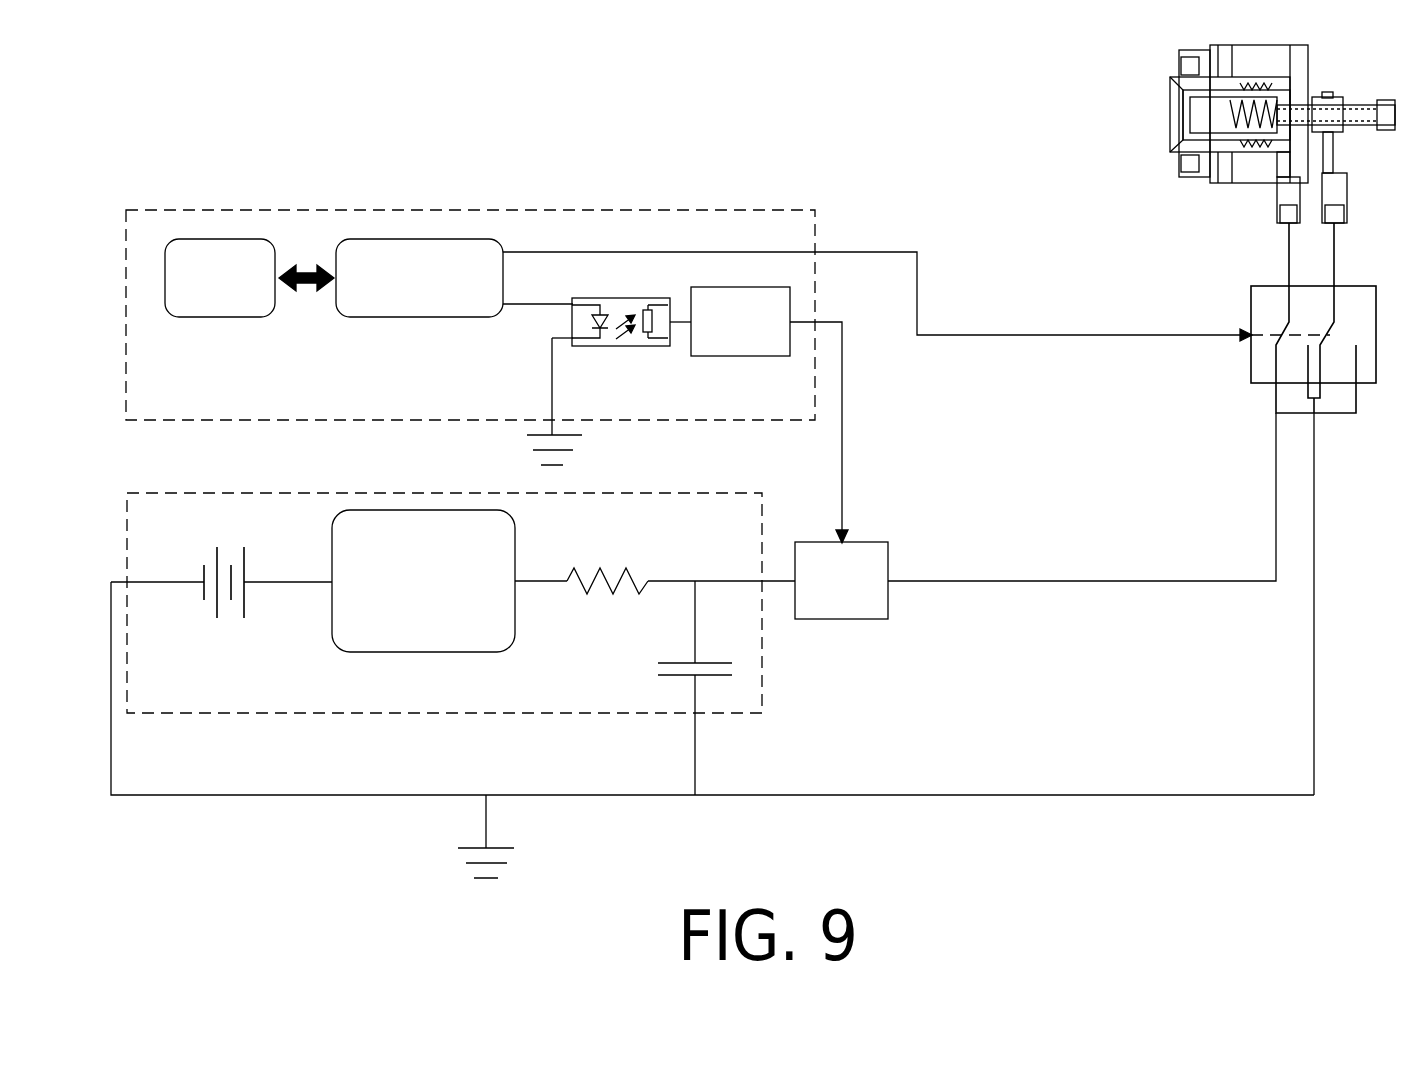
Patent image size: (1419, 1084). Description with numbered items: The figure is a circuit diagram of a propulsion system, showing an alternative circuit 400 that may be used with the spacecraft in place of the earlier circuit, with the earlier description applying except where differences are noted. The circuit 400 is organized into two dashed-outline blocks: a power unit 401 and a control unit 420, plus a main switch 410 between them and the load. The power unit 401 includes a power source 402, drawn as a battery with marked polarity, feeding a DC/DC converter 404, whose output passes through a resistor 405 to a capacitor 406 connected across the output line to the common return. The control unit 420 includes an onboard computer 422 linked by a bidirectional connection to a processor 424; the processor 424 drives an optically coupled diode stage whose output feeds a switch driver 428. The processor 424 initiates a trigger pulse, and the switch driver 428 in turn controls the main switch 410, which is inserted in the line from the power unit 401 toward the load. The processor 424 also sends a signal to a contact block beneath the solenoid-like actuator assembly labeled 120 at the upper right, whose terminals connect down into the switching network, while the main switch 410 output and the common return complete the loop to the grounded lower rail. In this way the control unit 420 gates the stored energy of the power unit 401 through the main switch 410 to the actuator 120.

The circuit 400 is at (636, 145).
The power unit 401 is at (178, 493).
The power source 402 is at (207, 608).
The DC/DC converter 404 is at (422, 653).
The resistor 405 is at (601, 595).
The capacitor 406 is at (718, 663).
The main switch 410 is at (878, 542).
The control unit 420 is at (178, 210).
The onboard computer 422 is at (218, 318).
The processor 424 is at (420, 318).
The switch driver 428 is at (738, 357).
The solenoid 120 is at (1178, 63).